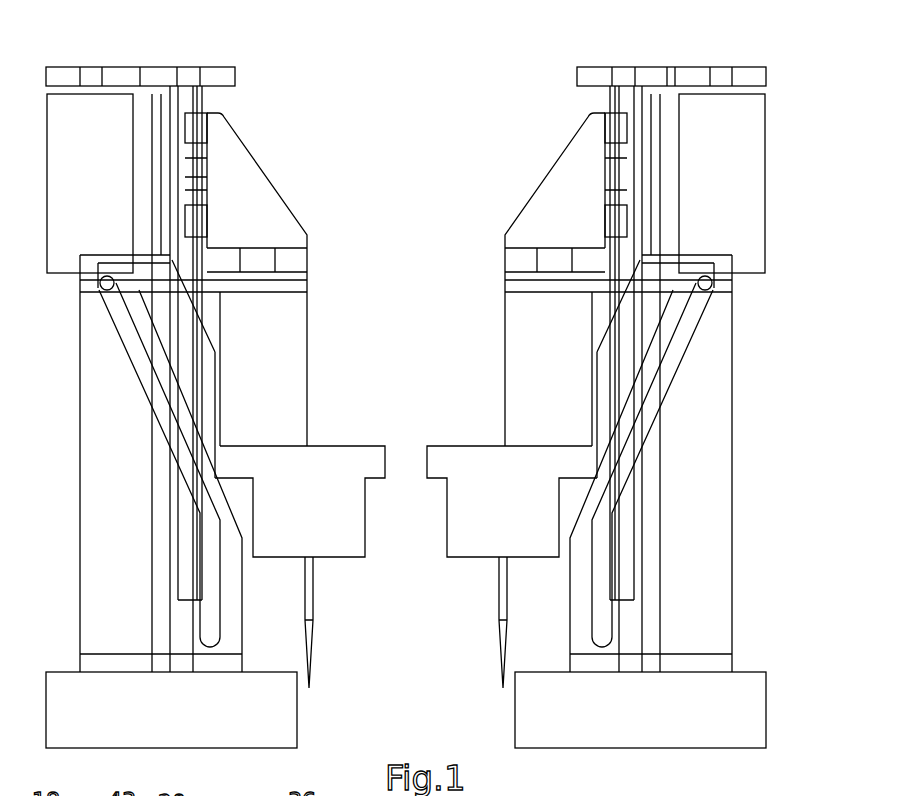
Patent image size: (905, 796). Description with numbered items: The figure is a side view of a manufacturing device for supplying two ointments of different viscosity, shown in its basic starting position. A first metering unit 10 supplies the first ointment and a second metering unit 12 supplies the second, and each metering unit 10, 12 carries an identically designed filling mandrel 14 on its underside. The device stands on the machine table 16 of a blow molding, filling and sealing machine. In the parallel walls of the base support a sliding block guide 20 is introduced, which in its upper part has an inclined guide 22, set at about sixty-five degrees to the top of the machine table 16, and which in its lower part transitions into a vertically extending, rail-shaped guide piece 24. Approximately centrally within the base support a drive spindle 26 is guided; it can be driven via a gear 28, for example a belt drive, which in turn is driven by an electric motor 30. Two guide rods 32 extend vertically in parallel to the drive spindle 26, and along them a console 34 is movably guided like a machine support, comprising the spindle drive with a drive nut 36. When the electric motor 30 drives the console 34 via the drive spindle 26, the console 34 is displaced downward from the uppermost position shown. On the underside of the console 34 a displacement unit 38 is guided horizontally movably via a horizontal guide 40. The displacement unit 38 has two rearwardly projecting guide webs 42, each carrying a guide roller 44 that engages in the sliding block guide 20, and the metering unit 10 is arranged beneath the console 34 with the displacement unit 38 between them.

The first metering unit 10 is at (330, 482).
The second metering unit 12 is at (480, 496).
The filling mandrel 14 is at (312, 642).
The machine table 16 is at (174, 721).
The sliding block guide 20 is at (130, 344).
The inclined guide 22 is at (145, 390).
The rail-shaped guide piece 24 is at (208, 574).
The drive spindle 26 is at (210, 100).
The gear 28 is at (160, 75).
The electric motor 30 is at (80, 141).
The guide rods 32 is at (628, 618).
The console 34 is at (250, 193).
The drive nut 36 is at (210, 173).
The displacement unit 38 is at (293, 348).
The horizontal guide 40 is at (283, 267).
The guide webs 42 is at (135, 282).
The guide roller 44 is at (102, 279).